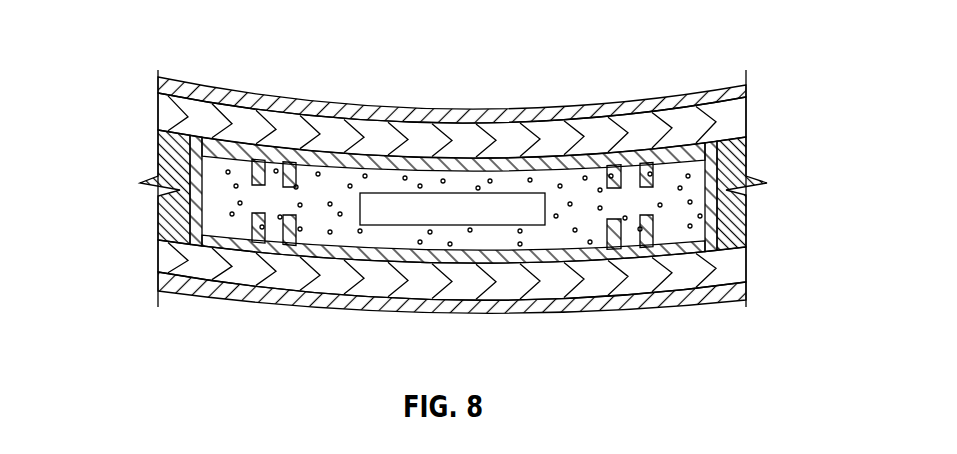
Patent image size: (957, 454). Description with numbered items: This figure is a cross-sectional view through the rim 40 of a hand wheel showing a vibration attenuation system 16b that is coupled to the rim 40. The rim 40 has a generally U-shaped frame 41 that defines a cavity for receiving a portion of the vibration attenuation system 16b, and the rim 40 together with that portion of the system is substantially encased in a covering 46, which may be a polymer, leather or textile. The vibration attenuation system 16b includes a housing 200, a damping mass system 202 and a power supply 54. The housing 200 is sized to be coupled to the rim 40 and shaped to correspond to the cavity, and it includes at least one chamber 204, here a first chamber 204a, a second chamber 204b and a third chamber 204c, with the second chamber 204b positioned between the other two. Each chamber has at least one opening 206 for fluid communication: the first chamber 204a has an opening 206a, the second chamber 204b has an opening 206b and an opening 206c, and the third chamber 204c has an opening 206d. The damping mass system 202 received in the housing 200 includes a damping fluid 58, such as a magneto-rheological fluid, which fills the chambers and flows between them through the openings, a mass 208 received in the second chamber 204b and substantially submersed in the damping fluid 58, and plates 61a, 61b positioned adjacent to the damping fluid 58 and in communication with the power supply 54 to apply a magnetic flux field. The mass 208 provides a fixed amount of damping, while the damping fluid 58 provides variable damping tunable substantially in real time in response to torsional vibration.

The vibration attenuation system 16b is at (176, 34).
The power supply 54 is at (158, 203).
The chamber 204 is at (150, 160).
The first chamber 204a is at (236, 132).
The second chamber 204b is at (398, 145).
The third chamber 204c is at (695, 128).
The opening 206 is at (311, 170).
The opening 206a is at (280, 222).
The opening 206b is at (336, 224).
The opening 206c is at (613, 221).
The opening 206d is at (645, 220).
The mass 208 is at (470, 193).
The damping fluid 58 is at (663, 175).
The covering 46 is at (747, 92).
The frame 41 is at (747, 117).
The housing 200 is at (758, 140).
The damping mass system 202 is at (775, 163).
The plate 61a is at (160, 217).
The plate 61b is at (748, 230).
The rim 40 is at (728, 320).